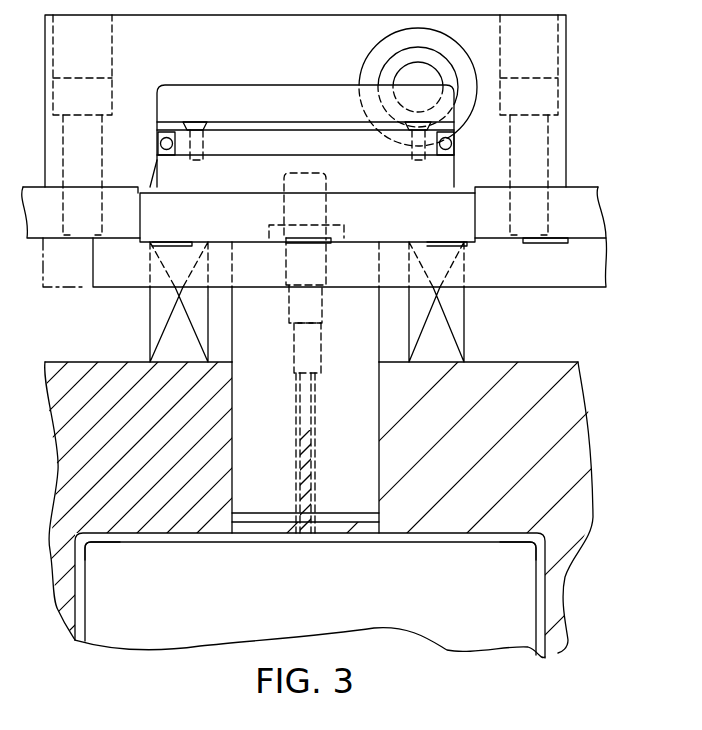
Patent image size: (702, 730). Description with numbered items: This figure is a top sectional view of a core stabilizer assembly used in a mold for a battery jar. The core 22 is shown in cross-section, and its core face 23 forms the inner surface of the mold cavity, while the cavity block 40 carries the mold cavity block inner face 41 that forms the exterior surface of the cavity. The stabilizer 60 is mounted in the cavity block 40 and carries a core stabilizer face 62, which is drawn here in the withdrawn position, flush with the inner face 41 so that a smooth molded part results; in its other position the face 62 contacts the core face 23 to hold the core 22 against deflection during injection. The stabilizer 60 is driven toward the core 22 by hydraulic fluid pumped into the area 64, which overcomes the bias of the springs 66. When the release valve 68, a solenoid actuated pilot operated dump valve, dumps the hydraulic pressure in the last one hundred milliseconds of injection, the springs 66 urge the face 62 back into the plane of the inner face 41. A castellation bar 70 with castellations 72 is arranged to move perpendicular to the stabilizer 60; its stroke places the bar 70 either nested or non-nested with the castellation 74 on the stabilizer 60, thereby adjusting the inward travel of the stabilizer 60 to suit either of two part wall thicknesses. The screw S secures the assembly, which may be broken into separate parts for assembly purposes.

The core 22 is at (227, 597).
The core face 23 is at (185, 543).
The cavity block 40 is at (100, 362).
The mold cavity block inner face 41 is at (466, 535).
The stabilizer 60 is at (362, 337).
The core stabilizer face 62 is at (262, 535).
The area 64 is at (227, 97).
The springs 66 is at (150, 308).
The release valve 68 is at (401, 71).
The castellation bar 70 is at (528, 277).
The castellations 72 is at (258, 240).
The castellation 74 is at (301, 242).
The screw S is at (317, 450).